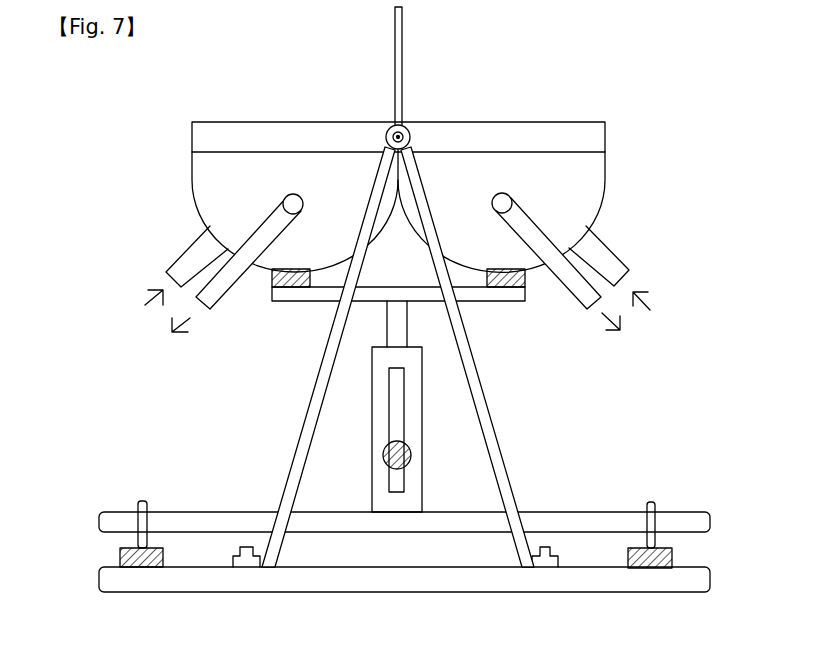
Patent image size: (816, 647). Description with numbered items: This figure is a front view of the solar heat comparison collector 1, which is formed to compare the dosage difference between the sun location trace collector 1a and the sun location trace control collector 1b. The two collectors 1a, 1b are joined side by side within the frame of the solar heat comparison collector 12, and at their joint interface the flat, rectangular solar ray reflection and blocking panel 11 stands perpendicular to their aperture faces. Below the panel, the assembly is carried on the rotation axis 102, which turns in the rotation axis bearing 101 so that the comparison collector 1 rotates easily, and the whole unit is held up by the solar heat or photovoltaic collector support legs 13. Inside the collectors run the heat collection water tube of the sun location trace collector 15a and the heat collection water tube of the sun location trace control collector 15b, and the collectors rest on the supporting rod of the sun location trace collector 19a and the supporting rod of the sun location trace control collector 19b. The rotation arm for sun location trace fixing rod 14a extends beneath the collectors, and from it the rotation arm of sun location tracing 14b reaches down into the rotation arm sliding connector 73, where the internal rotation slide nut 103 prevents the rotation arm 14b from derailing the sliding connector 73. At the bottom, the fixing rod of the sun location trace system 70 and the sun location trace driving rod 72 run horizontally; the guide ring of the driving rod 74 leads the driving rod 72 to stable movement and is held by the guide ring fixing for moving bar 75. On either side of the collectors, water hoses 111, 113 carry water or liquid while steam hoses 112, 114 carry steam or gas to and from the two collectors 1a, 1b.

The solar heat comparison collector 1 is at (402, 174).
The sun location trace collector 1a is at (213, 171).
The sun location trace control collector 1b is at (585, 171).
The solar ray reflection and blocking panel 11 is at (403, 52).
The frame of the solar heat comparison collector 12 is at (275, 133).
The solar heat or photovoltaic collector support legs 13 is at (316, 385).
The rotation arm for sun location trace fixing rod 14a is at (400, 290).
The rotation arm of sun location tracing 14b is at (397, 322).
The heat collection water tube of the sun location trace collector 15a is at (303, 204).
The heat collection water tube of the sun location trace control collector 15b is at (512, 203).
The supporting rod of the sun location trace collector 19a is at (283, 288).
The supporting rod of the sun location trace control collector 19b is at (508, 288).
The fixing rod of the sun location trace system 70 is at (469, 580).
The sun location trace driving rod 72 is at (684, 512).
The rotation arm sliding connector 73 is at (413, 373).
The guide ring of the driving rod 74 is at (650, 503).
The guide ring fixing for moving bar 75 is at (672, 560).
The rotation axis bearing 101 is at (408, 127).
The rotation axis 102 is at (390, 128).
The internal rotation slide nut 103 is at (411, 455).
The water hose 111 is at (183, 275).
The steam hose 112 is at (208, 297).
The water hose 113 is at (622, 270).
The steam hose 114 is at (587, 297).